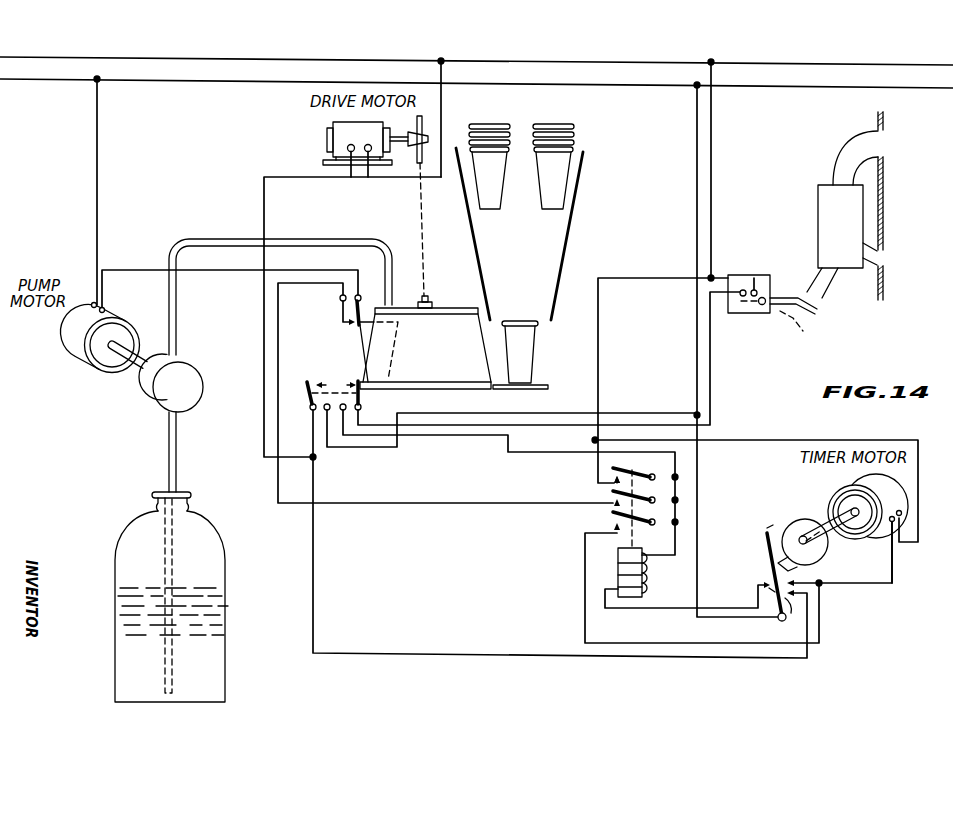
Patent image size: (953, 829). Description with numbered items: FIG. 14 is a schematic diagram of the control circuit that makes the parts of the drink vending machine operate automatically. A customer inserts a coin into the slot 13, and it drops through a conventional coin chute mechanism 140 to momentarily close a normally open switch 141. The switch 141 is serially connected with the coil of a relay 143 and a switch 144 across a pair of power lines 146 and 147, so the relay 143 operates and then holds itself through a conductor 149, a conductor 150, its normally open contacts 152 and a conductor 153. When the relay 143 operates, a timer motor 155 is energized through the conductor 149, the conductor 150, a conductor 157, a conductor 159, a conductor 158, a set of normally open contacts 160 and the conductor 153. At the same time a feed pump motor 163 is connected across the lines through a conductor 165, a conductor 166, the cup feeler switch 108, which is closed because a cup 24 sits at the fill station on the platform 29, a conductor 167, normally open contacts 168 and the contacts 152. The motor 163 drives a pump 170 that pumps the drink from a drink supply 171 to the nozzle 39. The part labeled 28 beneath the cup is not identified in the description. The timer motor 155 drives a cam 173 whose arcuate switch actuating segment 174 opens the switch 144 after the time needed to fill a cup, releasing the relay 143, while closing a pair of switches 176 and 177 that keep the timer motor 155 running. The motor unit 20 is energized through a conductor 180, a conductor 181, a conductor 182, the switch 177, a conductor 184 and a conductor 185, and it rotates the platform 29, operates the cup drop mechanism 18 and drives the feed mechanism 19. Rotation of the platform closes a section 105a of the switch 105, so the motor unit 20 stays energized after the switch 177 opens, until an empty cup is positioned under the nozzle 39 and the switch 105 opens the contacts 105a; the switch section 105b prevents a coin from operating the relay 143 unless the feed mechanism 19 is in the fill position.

The slot 13 is at (874, 151).
The cup drop mechanism 18 is at (583, 139).
The feed mechanism 19 is at (459, 298).
The motor unit 20 is at (360, 176).
The cup 24 is at (528, 352).
The cup support plate 28 is at (530, 389).
The platform 29 is at (447, 388).
The nozzle 39 is at (391, 297).
The switch 105 is at (352, 381).
The switch section 105a is at (310, 378).
The switch section 105b is at (361, 396).
The cup feeler switch 108 is at (352, 318).
The coin chute mechanism 140 is at (826, 190).
The normally open switch 141 is at (786, 265).
The relay 143 is at (648, 588).
The switch 144 is at (768, 592).
The power line 146 is at (828, 89).
The power line 147 is at (169, 57).
The conductor 149 is at (711, 223).
The conductor 150 is at (600, 387).
The normally open contacts 152 is at (612, 472).
The conductor 153 is at (675, 537).
The timer motor 155 is at (846, 487).
The conductor 157 is at (808, 442).
The conductor 158 is at (585, 611).
The conductor 159 is at (892, 574).
The normally open contacts 160 is at (613, 515).
The feed pump motor 163 is at (75, 324).
The conductor 165 is at (97, 160).
The conductor 166 is at (237, 267).
The conductor 167 is at (278, 483).
The normally open contacts 168 is at (612, 499).
The pump 170 is at (184, 378).
The drink supply 171 is at (243, 567).
The cam 173 is at (826, 549).
The arcuate switch actuating segment 174 is at (769, 529).
The switch 176 is at (768, 567).
The switch 177 is at (787, 627).
The conductor 180 is at (441, 117).
The conductor 181 is at (264, 224).
The conductor 182 is at (486, 655).
The conductor 184 is at (697, 497).
The conductor 185 is at (697, 215).